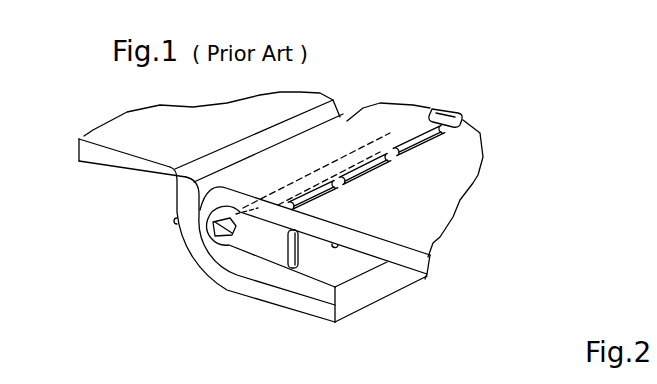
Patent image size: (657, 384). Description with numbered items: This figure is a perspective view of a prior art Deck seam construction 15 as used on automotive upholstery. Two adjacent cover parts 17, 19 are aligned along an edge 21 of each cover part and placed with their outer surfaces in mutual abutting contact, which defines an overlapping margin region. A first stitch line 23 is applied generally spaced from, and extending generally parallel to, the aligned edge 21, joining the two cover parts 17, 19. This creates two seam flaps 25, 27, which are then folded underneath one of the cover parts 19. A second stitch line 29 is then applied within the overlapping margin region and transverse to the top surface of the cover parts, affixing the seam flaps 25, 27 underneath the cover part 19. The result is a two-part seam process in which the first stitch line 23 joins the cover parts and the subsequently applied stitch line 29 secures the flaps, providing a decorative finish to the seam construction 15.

The Deck seam construction 15 is at (157, 268).
The cover part 17 is at (87, 164).
The cover part 19 is at (480, 155).
The edge 21 is at (340, 120).
The first stitch line 23 is at (225, 248).
The seam flap 25 is at (333, 320).
The seam flap 27 is at (336, 293).
The second stitch line 29 is at (440, 107).